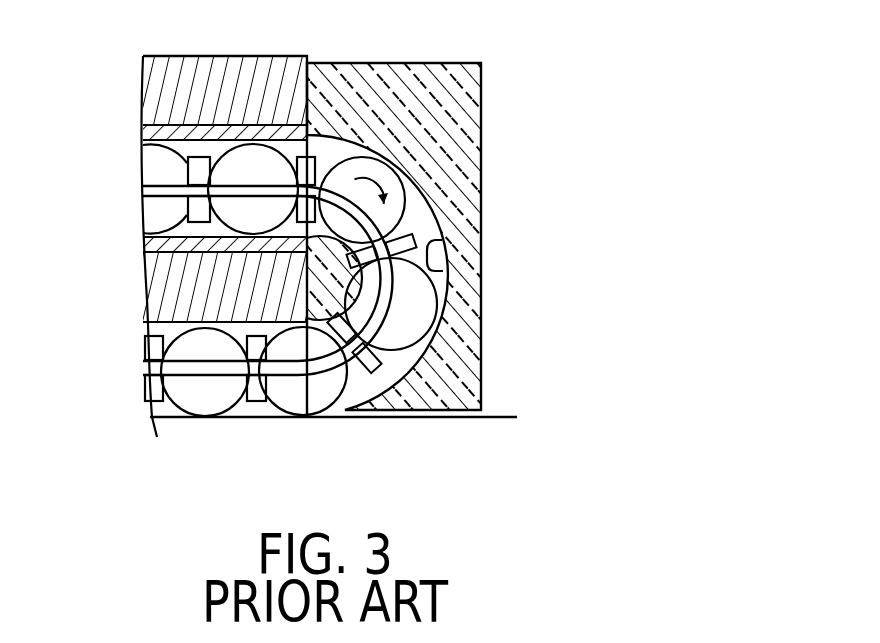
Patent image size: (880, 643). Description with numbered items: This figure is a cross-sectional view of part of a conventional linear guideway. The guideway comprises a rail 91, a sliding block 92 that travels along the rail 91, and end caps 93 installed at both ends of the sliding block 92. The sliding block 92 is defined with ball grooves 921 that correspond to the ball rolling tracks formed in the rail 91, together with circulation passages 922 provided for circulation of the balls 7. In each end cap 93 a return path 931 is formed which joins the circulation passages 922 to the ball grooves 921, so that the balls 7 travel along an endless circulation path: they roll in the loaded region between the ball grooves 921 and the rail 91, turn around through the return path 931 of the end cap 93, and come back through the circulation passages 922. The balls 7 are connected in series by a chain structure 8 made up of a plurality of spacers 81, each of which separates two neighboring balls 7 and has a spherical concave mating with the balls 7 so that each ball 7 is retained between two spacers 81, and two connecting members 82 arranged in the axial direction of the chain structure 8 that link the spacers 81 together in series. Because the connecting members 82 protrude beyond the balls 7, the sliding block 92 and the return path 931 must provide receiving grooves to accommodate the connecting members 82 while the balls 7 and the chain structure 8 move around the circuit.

The ball 7 is at (217, 392).
The chain structure 8 is at (262, 407).
The spacer 81 is at (395, 240).
The connecting member 82 is at (287, 373).
The rail 91 is at (463, 436).
The sliding block 92 is at (262, 66).
The ball groove 921 is at (147, 342).
The circulation passage 922 is at (167, 163).
The end cap 93 is at (443, 92).
The return path 931 is at (443, 270).